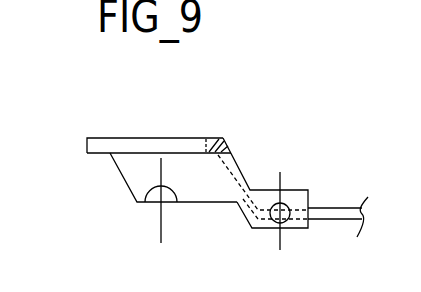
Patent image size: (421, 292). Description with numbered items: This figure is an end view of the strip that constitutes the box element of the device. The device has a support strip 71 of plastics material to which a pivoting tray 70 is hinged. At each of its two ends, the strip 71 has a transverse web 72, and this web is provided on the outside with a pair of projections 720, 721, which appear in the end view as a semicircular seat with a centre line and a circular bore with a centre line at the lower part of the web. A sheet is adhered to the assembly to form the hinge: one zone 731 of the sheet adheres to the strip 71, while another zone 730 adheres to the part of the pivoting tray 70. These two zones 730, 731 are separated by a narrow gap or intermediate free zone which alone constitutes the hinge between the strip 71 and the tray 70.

The pivoting tray 70 is at (328, 210).
The support strip 71 is at (123, 146).
The transverse web 72 is at (140, 173).
The projection 720 is at (150, 202).
The projection 721 is at (278, 221).
The zone of the sheet 730 is at (238, 170).
The zone of the sheet 731 is at (173, 138).